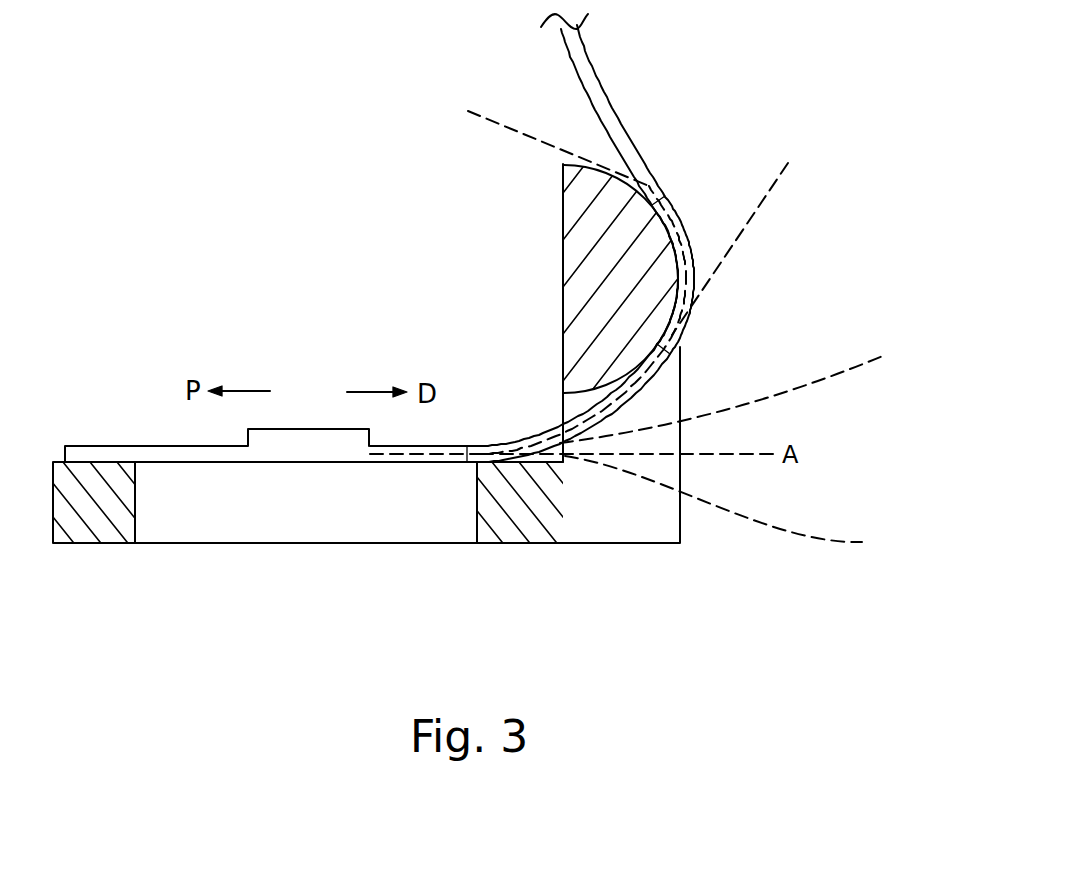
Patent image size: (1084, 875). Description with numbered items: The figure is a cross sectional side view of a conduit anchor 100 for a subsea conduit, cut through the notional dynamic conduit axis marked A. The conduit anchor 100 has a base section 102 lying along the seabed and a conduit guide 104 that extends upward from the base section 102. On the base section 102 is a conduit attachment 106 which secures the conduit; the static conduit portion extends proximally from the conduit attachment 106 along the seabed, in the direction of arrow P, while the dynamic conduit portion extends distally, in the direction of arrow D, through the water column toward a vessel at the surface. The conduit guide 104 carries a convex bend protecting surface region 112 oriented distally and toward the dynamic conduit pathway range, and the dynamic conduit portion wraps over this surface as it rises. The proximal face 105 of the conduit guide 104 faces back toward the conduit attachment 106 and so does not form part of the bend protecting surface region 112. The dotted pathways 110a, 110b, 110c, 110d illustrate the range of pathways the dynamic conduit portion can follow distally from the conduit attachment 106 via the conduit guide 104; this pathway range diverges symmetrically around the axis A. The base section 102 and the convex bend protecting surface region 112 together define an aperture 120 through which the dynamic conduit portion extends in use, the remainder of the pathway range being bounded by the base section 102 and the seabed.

The conduit anchor 100 is at (140, 268).
The base section 102 is at (397, 533).
The conduit guide 104 is at (637, 290).
The proximal face 105 is at (563, 270).
The conduit attachment 106 is at (284, 450).
The dotted pathway 110a is at (745, 508).
The dotted pathway 110b is at (754, 391).
The dotted pathway 110c is at (754, 235).
The dotted pathway 110d is at (524, 139).
The convex bend protecting surface region 112 is at (684, 237).
The aperture 120 is at (563, 410).